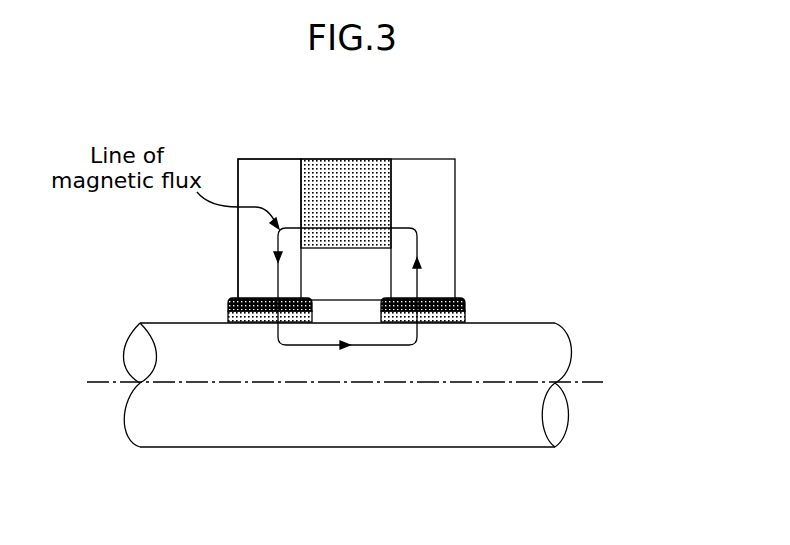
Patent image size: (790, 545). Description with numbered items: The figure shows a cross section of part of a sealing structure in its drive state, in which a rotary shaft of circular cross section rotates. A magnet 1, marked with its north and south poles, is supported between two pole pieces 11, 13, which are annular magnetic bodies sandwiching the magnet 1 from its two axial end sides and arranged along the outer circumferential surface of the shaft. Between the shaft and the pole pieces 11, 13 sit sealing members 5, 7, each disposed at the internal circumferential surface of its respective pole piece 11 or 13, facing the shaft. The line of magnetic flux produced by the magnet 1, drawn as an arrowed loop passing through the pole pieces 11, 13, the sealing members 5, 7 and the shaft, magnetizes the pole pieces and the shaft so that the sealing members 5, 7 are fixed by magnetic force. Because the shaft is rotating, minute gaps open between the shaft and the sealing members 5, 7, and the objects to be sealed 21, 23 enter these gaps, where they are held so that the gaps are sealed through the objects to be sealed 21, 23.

The magnet 1 is at (345, 180).
The pole piece 11 is at (440, 192).
The pole piece 13 is at (253, 255).
The sealing member 7 is at (230, 303).
The object to be sealed 23 is at (228, 315).
The sealing member 5 is at (463, 303).
The object to be sealed 21 is at (464, 313).